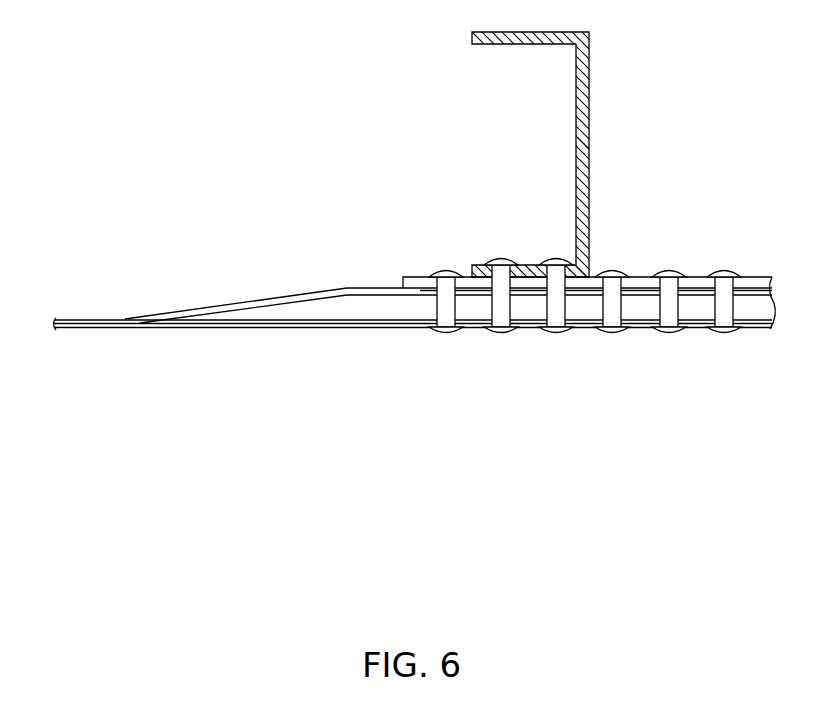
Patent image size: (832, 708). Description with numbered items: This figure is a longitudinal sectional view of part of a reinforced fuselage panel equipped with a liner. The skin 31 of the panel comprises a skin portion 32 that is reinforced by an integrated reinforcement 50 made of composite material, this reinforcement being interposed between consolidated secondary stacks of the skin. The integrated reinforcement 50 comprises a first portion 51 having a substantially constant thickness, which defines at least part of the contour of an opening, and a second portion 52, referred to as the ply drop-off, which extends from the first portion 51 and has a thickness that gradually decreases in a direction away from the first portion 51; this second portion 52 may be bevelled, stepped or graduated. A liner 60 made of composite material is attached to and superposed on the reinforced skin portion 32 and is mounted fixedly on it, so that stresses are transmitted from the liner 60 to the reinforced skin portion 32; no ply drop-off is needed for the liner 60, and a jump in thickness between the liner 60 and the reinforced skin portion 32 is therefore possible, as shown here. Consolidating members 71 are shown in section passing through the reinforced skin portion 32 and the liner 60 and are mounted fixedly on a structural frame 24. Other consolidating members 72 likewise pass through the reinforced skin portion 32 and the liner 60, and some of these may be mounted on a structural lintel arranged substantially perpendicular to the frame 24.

The structural frame 24 is at (590, 87).
The skin 31 is at (87, 289).
The skin portion 32 is at (433, 427).
The integrated reinforcement 50 is at (328, 313).
The first portion 51 is at (402, 313).
The second portion 52 is at (268, 313).
The liner 60 is at (413, 277).
The consolidating members 71 is at (553, 259).
The other consolidating members 72 is at (448, 333).